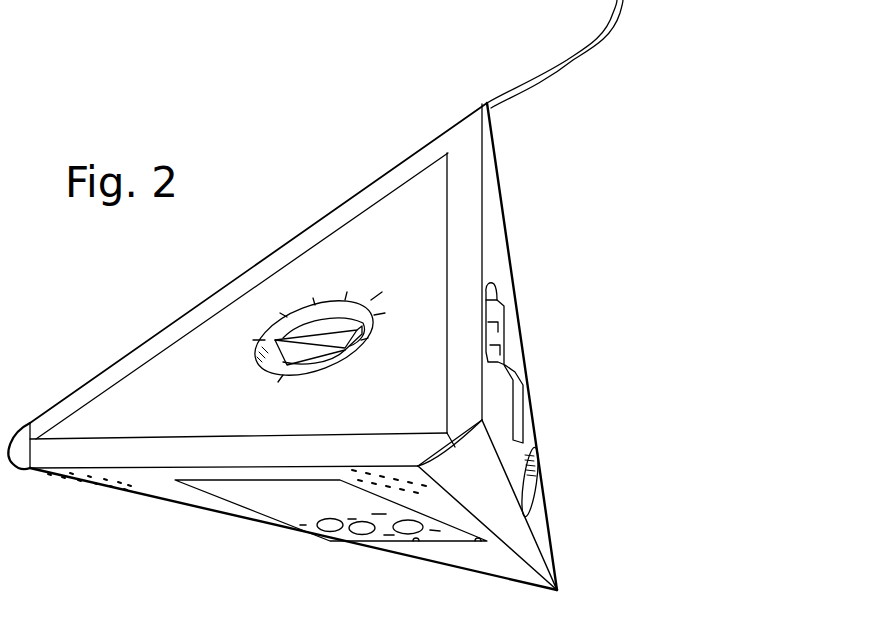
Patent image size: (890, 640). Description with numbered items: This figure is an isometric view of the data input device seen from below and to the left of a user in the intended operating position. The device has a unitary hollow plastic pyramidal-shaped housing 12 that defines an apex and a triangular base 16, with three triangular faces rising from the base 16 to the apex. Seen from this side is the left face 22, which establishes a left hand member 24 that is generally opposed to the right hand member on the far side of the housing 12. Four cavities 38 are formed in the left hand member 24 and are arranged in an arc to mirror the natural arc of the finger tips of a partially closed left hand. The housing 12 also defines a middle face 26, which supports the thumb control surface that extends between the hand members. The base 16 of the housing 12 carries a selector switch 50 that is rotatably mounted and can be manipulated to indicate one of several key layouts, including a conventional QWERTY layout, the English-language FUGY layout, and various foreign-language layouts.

The housing 12 is at (550, 595).
The base 16 is at (172, 412).
The left face 22 is at (503, 252).
The left hand member 24 is at (528, 414).
The middle face 26 is at (462, 557).
The cavities 38 is at (500, 327).
The selector switch 50 is at (302, 338).